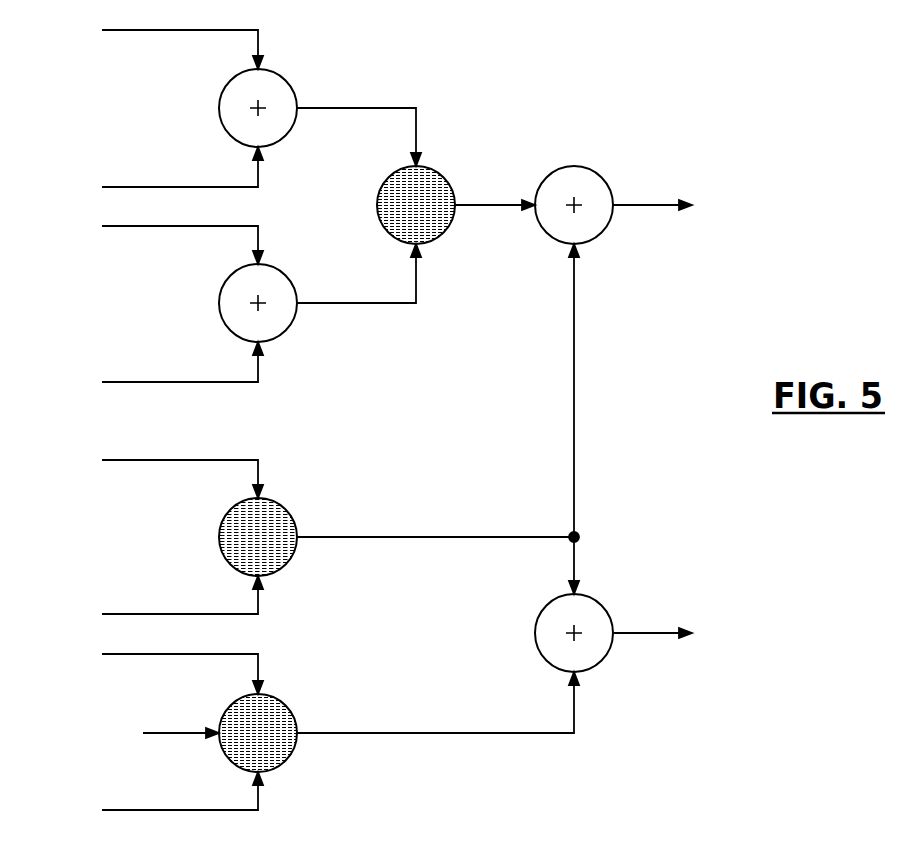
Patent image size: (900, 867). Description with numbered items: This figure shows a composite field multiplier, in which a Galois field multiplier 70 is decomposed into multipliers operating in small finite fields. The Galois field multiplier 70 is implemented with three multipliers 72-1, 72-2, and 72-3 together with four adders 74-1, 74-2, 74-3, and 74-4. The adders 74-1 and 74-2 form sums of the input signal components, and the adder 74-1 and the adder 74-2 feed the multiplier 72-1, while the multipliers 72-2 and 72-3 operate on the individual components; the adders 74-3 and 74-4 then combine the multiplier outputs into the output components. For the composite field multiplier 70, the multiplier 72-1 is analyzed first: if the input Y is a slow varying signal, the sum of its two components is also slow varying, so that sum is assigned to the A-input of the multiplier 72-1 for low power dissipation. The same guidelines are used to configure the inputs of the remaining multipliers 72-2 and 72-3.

The GF(2^m) multiplier 70 is at (562, 88).
The multiplier 72-1 is at (444, 177).
The multiplier 72-2 is at (286, 509).
The multiplier 72-3 is at (286, 705).
The adder 74-1 is at (283, 80).
The adder 74-2 is at (283, 275).
The adder 74-3 is at (601, 177).
The adder 74-4 is at (602, 605).